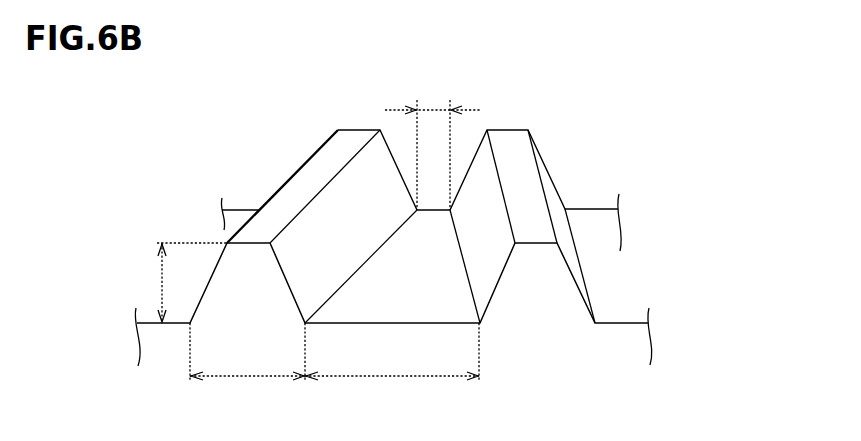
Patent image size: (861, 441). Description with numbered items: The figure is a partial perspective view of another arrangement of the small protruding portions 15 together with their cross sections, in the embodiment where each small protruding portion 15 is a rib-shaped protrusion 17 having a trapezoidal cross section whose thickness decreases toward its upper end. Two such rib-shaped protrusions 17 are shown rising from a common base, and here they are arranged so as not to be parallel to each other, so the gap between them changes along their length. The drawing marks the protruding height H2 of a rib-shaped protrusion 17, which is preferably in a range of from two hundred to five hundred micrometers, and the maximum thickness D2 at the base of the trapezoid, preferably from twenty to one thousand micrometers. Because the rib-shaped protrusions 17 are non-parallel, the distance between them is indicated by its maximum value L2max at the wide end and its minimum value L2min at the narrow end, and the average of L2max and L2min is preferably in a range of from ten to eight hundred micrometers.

The small protruding portion 15 is at (393, 242).
The rib-shaped protrusion 17 is at (300, 166).
The protruding height H2 is at (173, 283).
The maximum thickness D2 is at (247, 365).
The maximum value of the distance L2max is at (392, 365).
The minimum value of the distance L2min is at (432, 144).